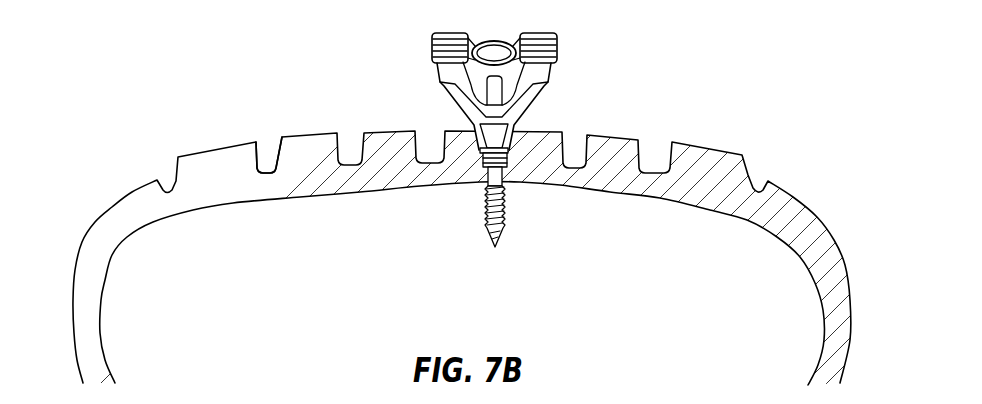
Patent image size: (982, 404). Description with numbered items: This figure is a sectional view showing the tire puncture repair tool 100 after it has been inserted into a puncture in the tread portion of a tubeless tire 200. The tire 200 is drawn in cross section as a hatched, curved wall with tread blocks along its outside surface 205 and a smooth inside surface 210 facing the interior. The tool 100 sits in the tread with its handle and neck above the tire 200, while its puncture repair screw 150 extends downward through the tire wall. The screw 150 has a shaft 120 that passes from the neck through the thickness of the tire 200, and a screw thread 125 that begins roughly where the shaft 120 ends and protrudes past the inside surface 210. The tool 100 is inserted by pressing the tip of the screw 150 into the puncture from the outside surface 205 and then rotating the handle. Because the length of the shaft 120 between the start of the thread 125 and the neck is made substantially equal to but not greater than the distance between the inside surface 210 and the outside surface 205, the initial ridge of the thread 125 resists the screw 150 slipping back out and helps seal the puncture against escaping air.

The tire puncture repair tool 100 is at (435, 88).
The shaft 120 is at (489, 179).
The screw thread 125 is at (504, 208).
The puncture repair screw 150 is at (473, 201).
The tire 200 is at (133, 152).
The outside surface 205 is at (278, 150).
The inside surface 210 is at (273, 199).